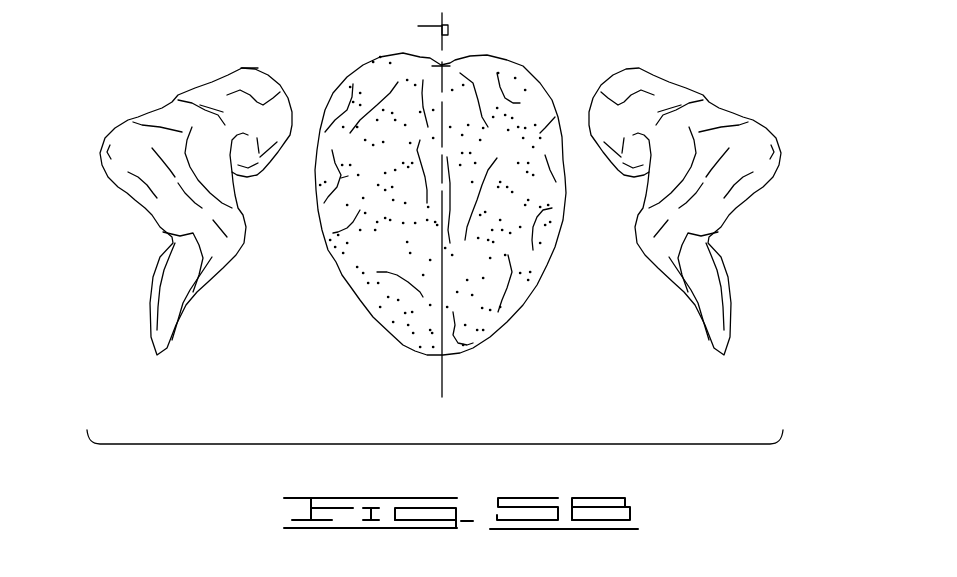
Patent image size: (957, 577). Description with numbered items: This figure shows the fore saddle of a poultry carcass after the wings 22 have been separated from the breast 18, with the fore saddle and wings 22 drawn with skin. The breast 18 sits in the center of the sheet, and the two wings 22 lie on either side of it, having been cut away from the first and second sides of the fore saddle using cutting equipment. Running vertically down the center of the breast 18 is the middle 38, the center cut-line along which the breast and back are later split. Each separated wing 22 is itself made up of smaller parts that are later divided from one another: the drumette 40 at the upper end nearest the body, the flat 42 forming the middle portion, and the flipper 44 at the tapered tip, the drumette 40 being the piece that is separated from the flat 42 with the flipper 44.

The breast 18 is at (365, 253).
The wings 22 is at (178, 100).
The middle 38 is at (440, 27).
The drumette 40 is at (252, 83).
The flat 42 is at (140, 181).
The flipper 44 is at (150, 303).